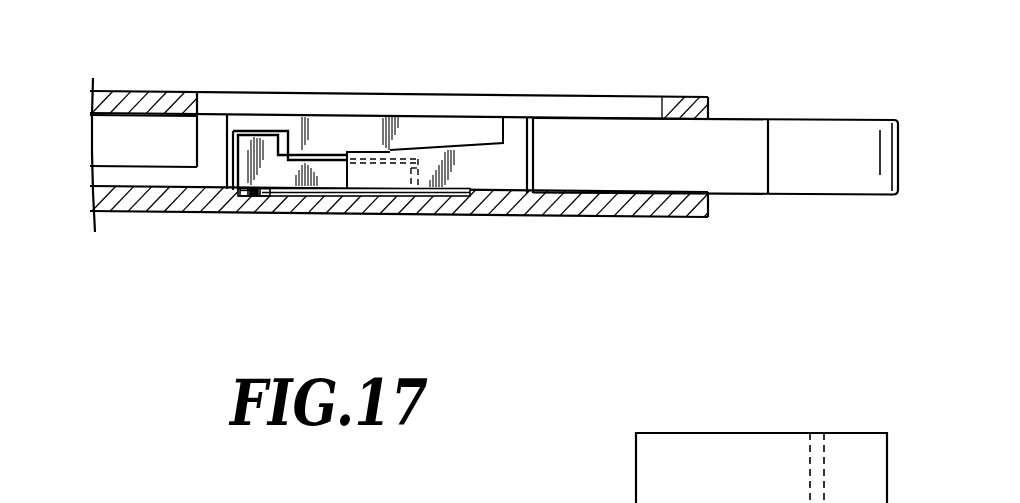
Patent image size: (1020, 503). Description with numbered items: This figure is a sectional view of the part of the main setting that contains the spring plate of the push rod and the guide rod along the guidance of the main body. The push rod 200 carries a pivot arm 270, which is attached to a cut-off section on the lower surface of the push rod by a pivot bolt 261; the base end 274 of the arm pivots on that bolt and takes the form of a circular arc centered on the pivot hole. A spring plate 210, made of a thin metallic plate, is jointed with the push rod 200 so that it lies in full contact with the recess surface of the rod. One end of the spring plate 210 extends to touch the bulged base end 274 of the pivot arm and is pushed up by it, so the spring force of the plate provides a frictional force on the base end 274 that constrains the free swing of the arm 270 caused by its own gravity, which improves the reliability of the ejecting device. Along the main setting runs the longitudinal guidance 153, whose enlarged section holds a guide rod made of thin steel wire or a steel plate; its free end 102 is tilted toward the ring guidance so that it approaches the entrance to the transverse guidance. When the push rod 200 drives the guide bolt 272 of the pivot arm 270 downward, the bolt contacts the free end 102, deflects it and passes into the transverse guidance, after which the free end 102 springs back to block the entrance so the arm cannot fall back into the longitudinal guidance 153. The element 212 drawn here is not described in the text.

The free end of the guide rod 102 is at (274, 197).
The longitudinal guidance 153 is at (572, 196).
The push rod 200 is at (733, 134).
The spring plate 210 is at (487, 176).
The contact plate 212 is at (373, 177).
The pivot bolt 261 is at (379, 152).
The pivot arm 270 is at (296, 165).
The guide bolt 272 is at (251, 197).
The base end of the pivot arm 274 is at (392, 278).